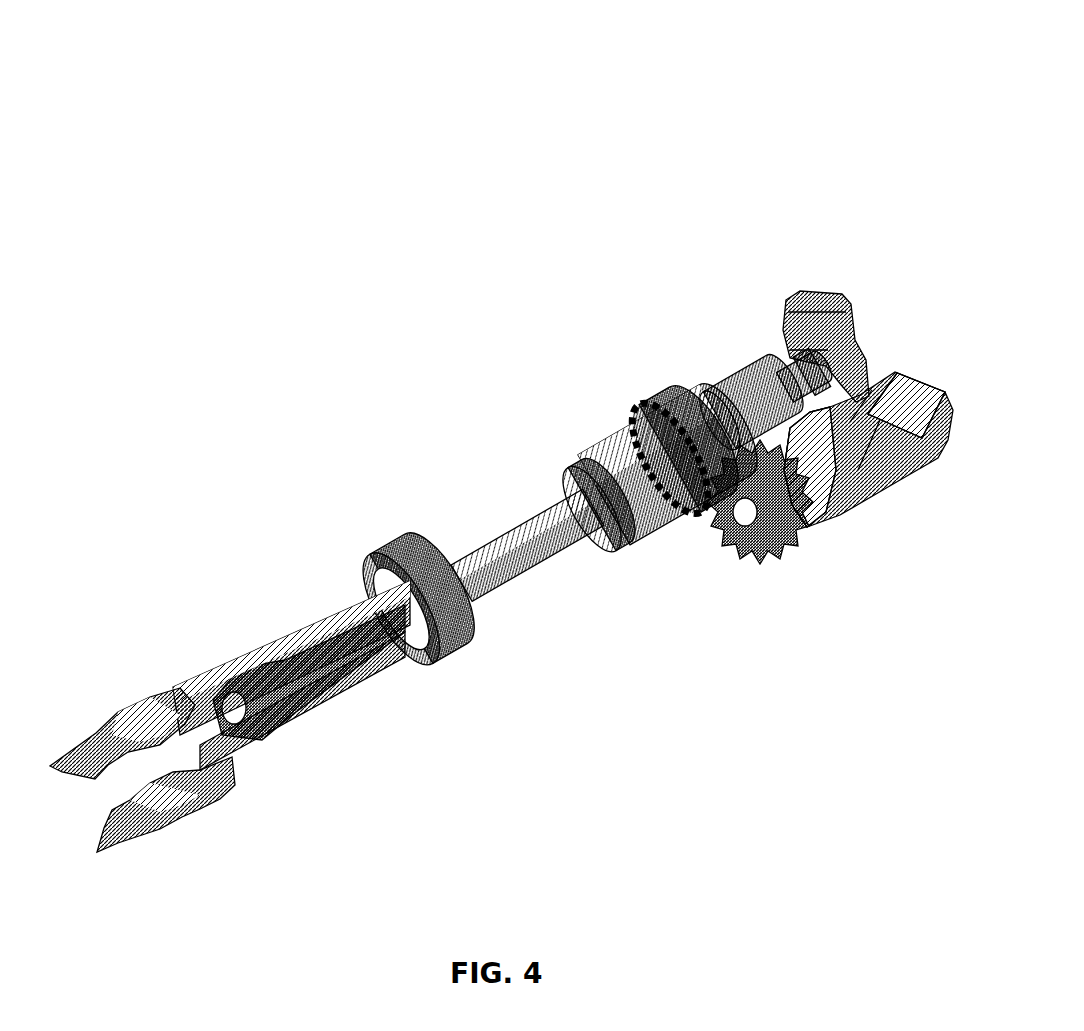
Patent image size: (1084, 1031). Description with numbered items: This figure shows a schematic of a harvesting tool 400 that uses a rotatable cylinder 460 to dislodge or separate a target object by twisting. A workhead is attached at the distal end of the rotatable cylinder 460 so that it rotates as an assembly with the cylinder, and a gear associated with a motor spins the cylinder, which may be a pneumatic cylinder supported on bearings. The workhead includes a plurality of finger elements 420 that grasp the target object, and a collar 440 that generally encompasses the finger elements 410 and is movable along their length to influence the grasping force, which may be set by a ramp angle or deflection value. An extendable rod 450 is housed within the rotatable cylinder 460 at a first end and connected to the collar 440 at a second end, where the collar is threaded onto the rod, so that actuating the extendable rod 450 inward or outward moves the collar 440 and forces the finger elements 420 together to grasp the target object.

The end effector assembly 400 is at (553, 300).
The plurality of finger elements 410 is at (400, 550).
The plurality of finger elements 420 is at (185, 678).
The collar 440 is at (297, 717).
The extendable rod 450 is at (315, 672).
The rotatable cylinder 460 is at (530, 517).